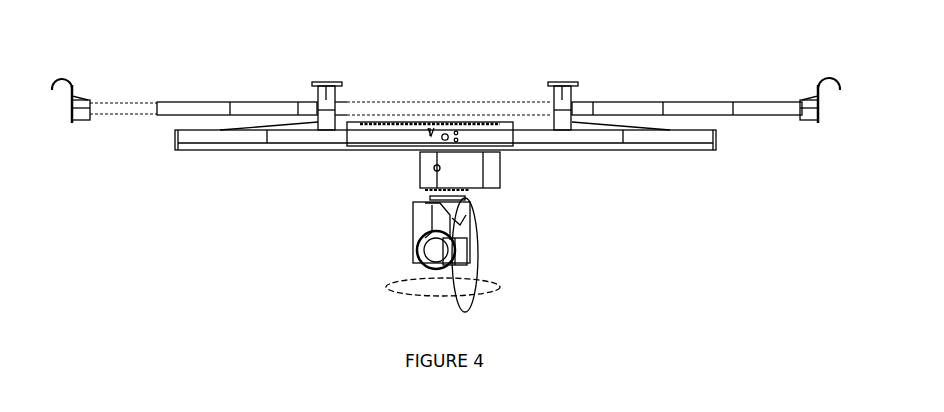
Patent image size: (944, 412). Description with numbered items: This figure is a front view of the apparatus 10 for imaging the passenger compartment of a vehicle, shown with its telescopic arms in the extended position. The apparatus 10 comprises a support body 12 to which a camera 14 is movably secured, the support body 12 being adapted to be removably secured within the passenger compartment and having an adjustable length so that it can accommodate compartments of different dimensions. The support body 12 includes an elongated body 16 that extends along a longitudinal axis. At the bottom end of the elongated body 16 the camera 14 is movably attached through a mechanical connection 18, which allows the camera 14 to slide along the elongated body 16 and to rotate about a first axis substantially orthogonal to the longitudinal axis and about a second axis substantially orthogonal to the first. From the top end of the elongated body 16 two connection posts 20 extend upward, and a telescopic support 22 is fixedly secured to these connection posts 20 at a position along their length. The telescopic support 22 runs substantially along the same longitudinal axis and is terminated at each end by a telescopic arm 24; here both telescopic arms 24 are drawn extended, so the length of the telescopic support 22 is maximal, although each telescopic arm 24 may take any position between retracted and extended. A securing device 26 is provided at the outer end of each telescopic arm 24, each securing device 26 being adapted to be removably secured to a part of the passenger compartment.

The apparatus 10 is at (178, 230).
The support body 12 is at (568, 197).
The camera 14 is at (456, 252).
The elongated body 16 is at (676, 138).
The mechanical connection 18 is at (360, 215).
The connection posts 20 is at (327, 112).
The telescopic support 22 is at (435, 105).
The telescopic arm 24 is at (258, 106).
The securing device 26 is at (66, 88).